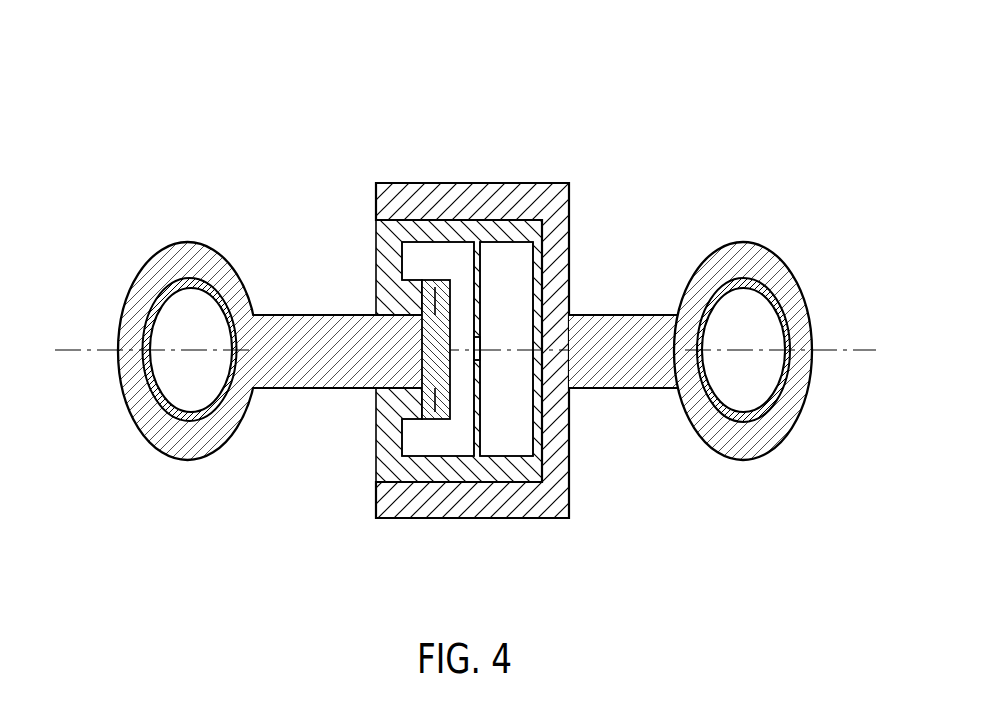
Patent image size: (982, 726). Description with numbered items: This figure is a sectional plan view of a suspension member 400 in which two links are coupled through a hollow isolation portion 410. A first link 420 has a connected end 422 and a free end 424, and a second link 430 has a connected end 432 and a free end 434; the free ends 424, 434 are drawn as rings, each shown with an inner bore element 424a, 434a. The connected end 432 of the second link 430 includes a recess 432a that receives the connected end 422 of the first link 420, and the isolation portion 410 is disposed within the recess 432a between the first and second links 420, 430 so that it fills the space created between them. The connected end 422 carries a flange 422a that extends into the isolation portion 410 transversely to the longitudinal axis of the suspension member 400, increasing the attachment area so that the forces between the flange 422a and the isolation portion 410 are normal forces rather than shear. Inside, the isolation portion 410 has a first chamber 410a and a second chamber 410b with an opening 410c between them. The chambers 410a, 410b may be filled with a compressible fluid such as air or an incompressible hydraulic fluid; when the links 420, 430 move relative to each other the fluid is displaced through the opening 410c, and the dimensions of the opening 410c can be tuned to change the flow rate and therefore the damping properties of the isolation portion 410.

The suspension member 400 is at (258, 103).
The first link 420 is at (290, 225).
The connected end 422 is at (376, 313).
The flange 422a is at (428, 286).
The free end 424 is at (147, 269).
The first ring bore liner 424a is at (153, 400).
The second link 430 is at (650, 205).
The connected end 432 is at (508, 183).
The recess 432a is at (516, 478).
The isolation portion 410 is at (376, 440).
The first chamber 410a is at (462, 425).
The second chamber 410b is at (513, 262).
The opening 410c is at (483, 356).
The free end 434 is at (793, 272).
The second ring bore liner 434a is at (782, 382).